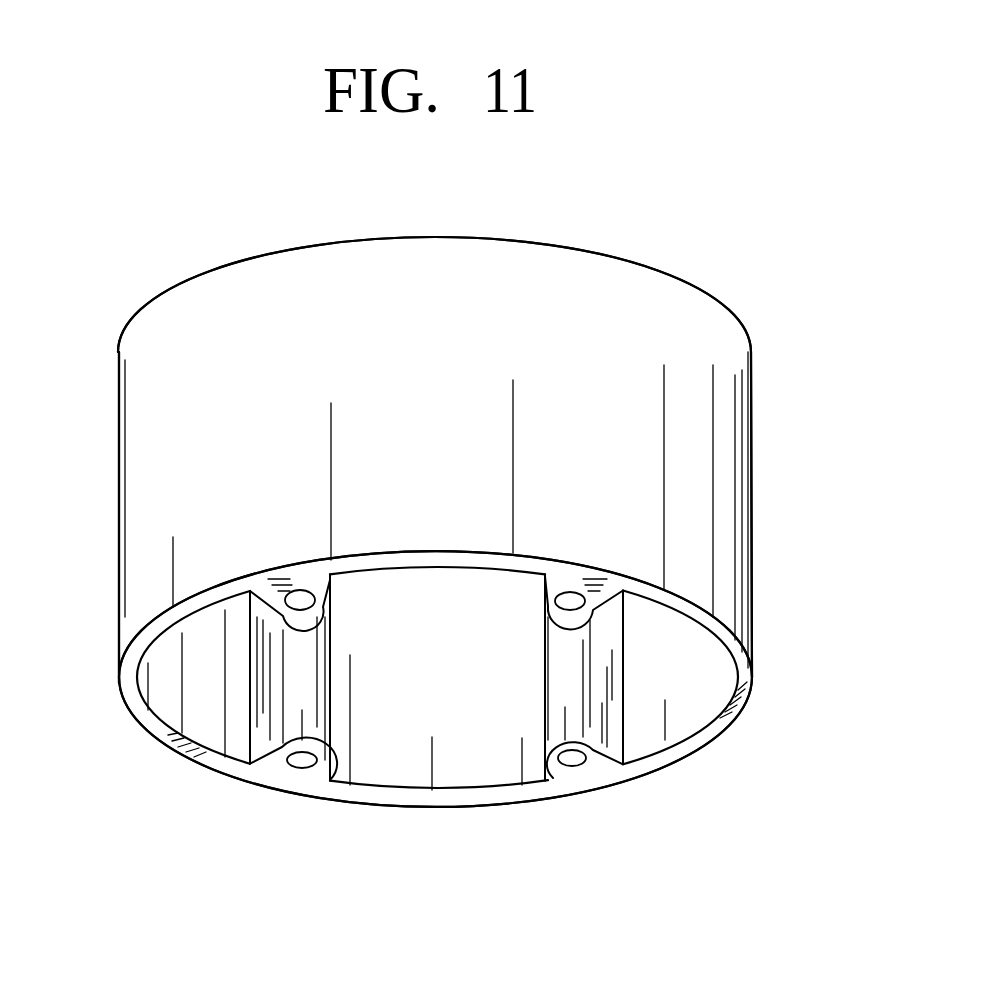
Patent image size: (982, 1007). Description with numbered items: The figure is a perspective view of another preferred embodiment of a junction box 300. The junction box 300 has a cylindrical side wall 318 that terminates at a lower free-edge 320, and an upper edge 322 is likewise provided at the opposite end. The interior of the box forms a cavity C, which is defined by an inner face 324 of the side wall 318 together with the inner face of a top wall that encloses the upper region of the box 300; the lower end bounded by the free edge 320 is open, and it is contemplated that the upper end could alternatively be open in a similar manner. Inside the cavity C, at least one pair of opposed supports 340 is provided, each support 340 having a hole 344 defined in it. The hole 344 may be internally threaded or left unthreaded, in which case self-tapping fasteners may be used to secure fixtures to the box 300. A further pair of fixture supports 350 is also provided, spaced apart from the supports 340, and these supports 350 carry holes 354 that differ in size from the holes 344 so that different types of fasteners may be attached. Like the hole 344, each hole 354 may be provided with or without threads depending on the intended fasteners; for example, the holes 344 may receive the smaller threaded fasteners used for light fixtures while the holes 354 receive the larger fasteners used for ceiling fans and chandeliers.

The junction box 300 is at (775, 636).
The side wall 318 is at (155, 459).
The lower free-edge 320 is at (377, 800).
The upper edge 322 is at (708, 300).
The inner face 324 is at (162, 683).
The support 340 is at (273, 725).
The hole 344 is at (569, 590).
The fixture support 350 is at (602, 720).
The hole 354 is at (298, 592).
The cavity C is at (466, 752).